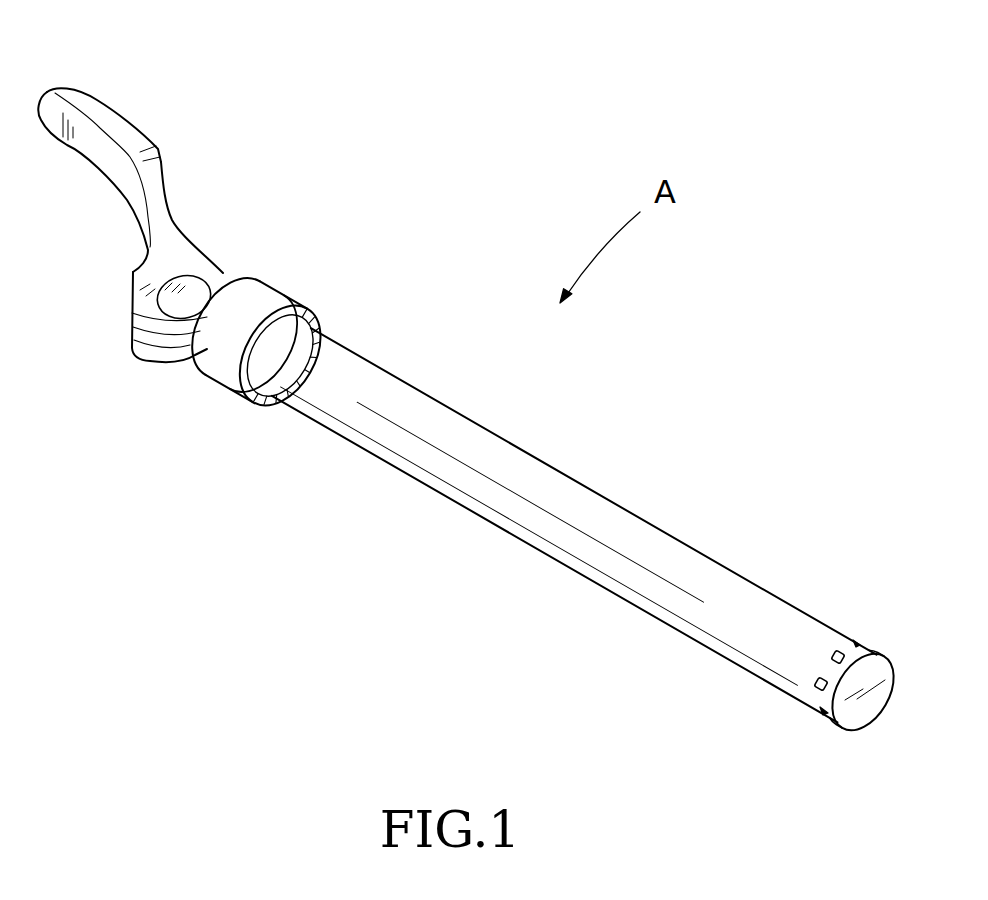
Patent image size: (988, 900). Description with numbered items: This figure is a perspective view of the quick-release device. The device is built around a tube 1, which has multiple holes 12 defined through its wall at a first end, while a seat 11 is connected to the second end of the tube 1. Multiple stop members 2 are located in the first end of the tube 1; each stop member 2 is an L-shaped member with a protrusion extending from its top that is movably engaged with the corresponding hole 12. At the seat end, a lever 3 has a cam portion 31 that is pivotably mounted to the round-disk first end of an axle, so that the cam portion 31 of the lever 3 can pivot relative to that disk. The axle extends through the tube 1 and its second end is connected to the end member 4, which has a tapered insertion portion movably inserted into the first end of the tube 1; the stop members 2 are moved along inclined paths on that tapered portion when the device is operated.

The tube 1 is at (560, 473).
The stop member 2 is at (837, 606).
The lever 3 is at (140, 150).
The end member 4 is at (870, 727).
The seat 11 is at (262, 281).
The hole 12 is at (834, 649).
The cam portion 31 is at (173, 354).